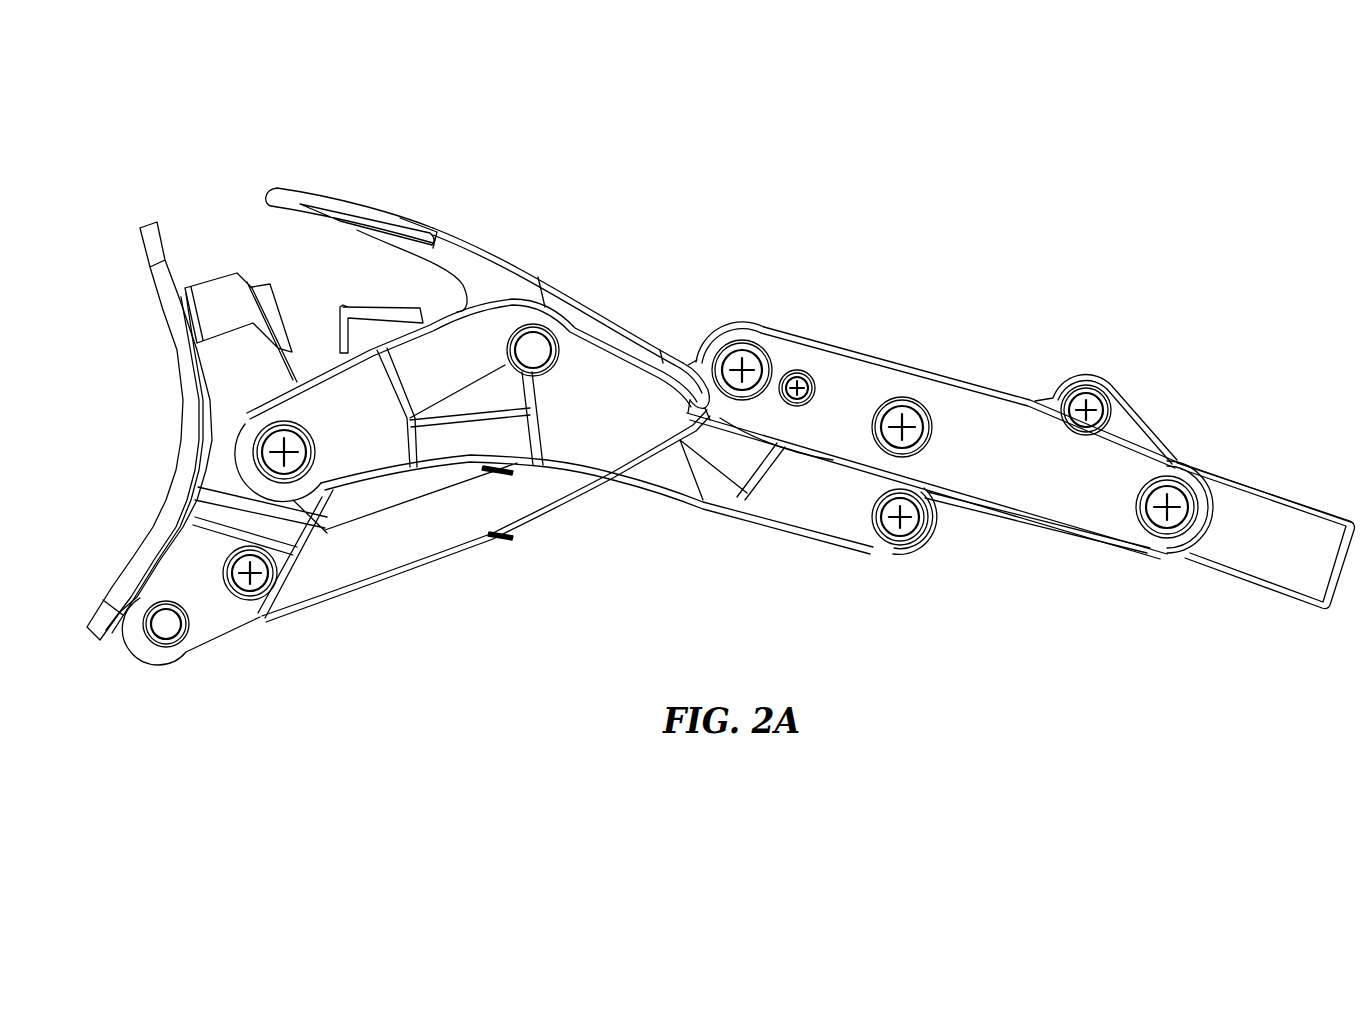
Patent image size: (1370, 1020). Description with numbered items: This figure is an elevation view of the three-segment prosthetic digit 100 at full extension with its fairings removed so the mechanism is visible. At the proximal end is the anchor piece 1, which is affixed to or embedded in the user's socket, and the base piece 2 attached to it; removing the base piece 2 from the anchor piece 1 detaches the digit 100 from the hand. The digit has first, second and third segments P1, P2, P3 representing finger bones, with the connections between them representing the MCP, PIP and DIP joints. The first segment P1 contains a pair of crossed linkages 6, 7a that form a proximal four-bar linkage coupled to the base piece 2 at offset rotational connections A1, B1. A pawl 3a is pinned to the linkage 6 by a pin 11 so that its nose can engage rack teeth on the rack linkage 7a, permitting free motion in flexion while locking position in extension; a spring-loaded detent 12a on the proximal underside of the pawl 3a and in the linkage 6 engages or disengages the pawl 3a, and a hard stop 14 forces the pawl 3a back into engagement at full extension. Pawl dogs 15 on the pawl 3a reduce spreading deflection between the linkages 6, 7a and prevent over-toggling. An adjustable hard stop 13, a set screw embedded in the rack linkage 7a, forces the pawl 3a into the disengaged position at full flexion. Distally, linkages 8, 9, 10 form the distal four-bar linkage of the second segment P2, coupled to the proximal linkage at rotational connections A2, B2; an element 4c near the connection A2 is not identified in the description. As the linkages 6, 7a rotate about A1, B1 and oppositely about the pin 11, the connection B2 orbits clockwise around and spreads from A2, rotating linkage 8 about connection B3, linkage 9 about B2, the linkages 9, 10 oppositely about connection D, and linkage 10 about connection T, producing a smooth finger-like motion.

The anchor piece 1 is at (150, 224).
The base piece 2 is at (207, 288).
The pawl 3a is at (307, 197).
The spring-loaded detent 12a is at (343, 313).
The pin 11 is at (533, 340).
The linkage 6 is at (602, 373).
The pawl dog 15 is at (673, 368).
The hard stop 14 is at (707, 367).
The rotational connection A2 is at (742, 362).
The small pivot 4c is at (797, 385).
The rotational connection B3 is at (901, 425).
The linkage 8 is at (983, 410).
The rotational connection D is at (1087, 402).
The linkage 10 is at (1283, 513).
The rotational connection T is at (1168, 508).
The linkage 9 is at (957, 517).
The rotational connection B2 is at (895, 520).
The linkage 7a is at (400, 550).
The adjustable hard stop 13 is at (500, 540).
The rotational connection B1 is at (285, 455).
The rotational connection A1 is at (250, 573).
The first segment P1 is at (506, 180).
The second segment P2 is at (940, 255).
The third segment P3 is at (1242, 388).
The three-segment prosthetic digit 100 is at (830, 105).